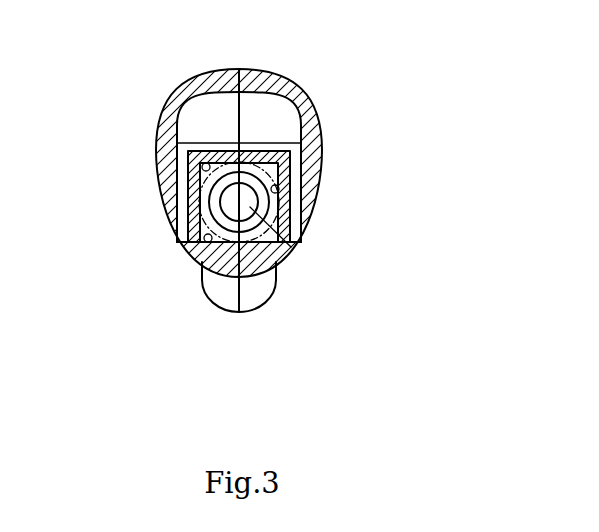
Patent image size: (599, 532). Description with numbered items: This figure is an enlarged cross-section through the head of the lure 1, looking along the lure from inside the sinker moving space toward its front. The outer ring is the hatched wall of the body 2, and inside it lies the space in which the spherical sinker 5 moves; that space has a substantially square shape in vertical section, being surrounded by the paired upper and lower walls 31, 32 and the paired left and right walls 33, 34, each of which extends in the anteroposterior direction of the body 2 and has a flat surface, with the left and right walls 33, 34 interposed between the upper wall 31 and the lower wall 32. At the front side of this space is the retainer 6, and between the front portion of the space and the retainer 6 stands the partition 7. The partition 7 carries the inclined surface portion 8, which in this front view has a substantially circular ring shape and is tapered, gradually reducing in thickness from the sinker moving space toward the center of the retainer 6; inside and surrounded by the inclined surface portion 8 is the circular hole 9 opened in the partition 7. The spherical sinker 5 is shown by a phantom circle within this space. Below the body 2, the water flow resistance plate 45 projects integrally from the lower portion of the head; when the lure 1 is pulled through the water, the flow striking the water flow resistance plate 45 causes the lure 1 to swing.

The lure 1 is at (459, 418).
The body 2 is at (309, 97).
The spherical sinker 5 is at (291, 247).
The retainer 6 is at (229, 207).
The partition 7 is at (297, 170).
The inclined surface portion 8 is at (264, 183).
The circular hole 9 is at (273, 256).
The upper wall 31 is at (221, 157).
The lower wall 32 is at (218, 250).
The left wall 33 is at (201, 184).
The right wall 34 is at (281, 222).
The water flow resistance plate 45 is at (257, 300).